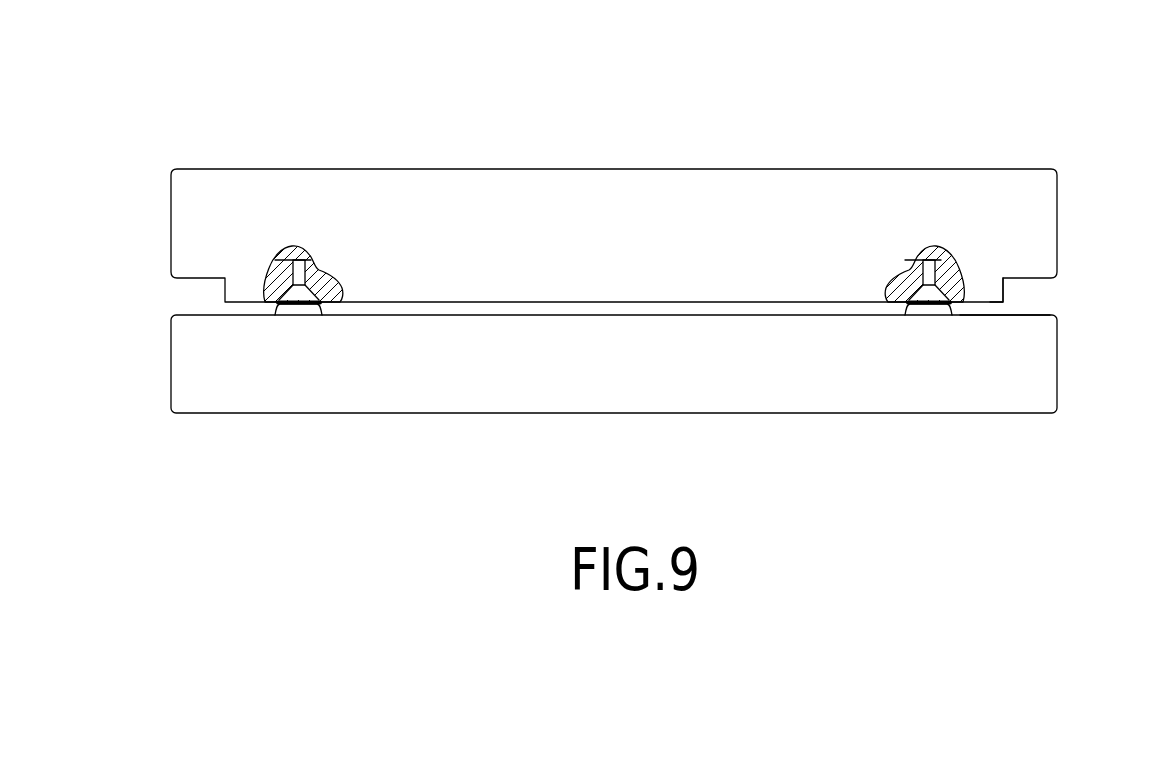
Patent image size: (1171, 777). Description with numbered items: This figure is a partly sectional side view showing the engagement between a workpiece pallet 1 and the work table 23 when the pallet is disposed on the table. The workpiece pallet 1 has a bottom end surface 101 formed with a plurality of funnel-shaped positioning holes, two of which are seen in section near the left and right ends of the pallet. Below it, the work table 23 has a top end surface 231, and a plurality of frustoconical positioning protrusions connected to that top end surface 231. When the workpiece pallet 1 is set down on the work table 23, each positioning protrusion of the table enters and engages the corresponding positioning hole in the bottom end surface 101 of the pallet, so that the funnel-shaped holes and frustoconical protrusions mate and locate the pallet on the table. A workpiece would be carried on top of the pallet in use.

The workpiece pallet 1 is at (836, 156).
The bottom end surface 101 is at (978, 302).
The work table 23 is at (1077, 420).
The top end surface 231 is at (1005, 317).